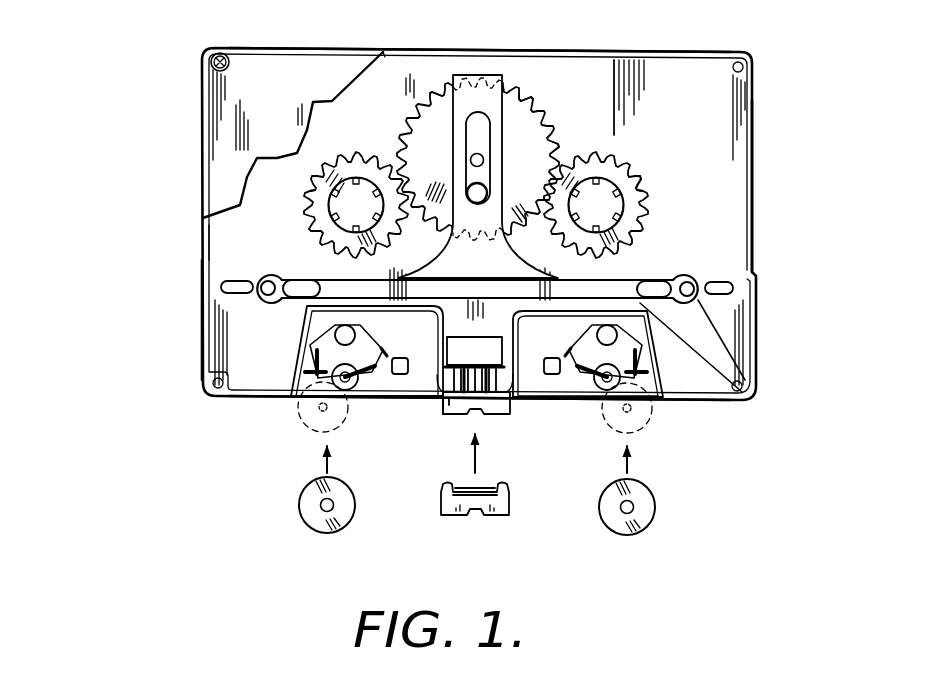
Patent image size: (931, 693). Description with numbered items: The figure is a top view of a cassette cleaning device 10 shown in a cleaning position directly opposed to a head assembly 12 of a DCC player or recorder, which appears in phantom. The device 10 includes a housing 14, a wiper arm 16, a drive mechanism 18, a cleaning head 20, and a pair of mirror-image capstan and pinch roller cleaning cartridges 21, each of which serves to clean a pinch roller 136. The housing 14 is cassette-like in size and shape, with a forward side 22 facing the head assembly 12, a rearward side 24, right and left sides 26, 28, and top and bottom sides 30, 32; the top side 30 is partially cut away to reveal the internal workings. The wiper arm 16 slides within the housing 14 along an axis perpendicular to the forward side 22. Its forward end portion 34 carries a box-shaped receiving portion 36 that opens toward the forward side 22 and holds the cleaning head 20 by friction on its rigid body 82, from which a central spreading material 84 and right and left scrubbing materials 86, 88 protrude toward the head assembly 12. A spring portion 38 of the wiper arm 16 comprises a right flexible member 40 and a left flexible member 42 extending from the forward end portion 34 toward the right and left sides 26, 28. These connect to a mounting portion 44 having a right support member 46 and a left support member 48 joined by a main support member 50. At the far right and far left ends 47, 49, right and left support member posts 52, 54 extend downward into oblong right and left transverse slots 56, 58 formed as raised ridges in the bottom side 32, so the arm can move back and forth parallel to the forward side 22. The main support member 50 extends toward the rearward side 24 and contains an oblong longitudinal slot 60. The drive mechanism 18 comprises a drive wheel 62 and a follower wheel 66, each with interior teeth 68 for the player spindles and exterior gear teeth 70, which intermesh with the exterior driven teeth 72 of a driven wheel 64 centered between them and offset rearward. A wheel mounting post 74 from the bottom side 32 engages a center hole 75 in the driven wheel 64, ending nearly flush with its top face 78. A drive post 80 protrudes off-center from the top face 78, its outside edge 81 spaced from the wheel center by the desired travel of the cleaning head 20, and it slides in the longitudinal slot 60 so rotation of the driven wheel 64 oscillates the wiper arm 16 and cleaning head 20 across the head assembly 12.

The cassette cleaning device 10 is at (126, 288).
The head assembly 12 is at (417, 513).
The housing 14 is at (204, 356).
The wiper arm 16 is at (501, 322).
The drive mechanism 18 is at (642, 112).
The cleaning head 20 is at (553, 400).
The capstan and pinch roller cleaning cartridge 21 is at (322, 392).
The forward side 22 is at (700, 402).
The rearward side 24 is at (478, 50).
The right side 26 is at (755, 165).
The left side 28 is at (204, 236).
The top side 30 is at (226, 136).
The bottom side 32 is at (423, 72).
The forward end portion 34 is at (437, 345).
The receiving portion 36 is at (394, 410).
The spring portion 38 is at (268, 370).
The right flexible member 40 is at (748, 385).
The left flexible member 42 is at (294, 303).
The mounting portion 44 is at (298, 245).
The right support member 46 is at (656, 275).
The far right end 47 is at (702, 278).
The left support member 48 is at (284, 278).
The far left end 49 is at (266, 296).
The main support member 50 is at (490, 98).
The right support member post 52 is at (752, 320).
The left support member post 54 is at (222, 285).
The right transverse slot 56 is at (735, 297).
The left transverse slot 58 is at (254, 302).
The longitudinal slot 60 is at (452, 118).
The drive wheel 62 is at (645, 208).
The driven wheel 64 is at (533, 112).
The follower wheel 66 is at (360, 152).
The interior teeth 68 is at (598, 232).
The exterior gear teeth 70 is at (305, 200).
The exterior driven teeth 72 is at (558, 145).
The wheel mounting post 74 is at (492, 150).
The center hole 75 is at (470, 160).
The top face 78 is at (437, 99).
The drive post 80 is at (488, 189).
The outside edge 81 is at (470, 240).
The rigid body 82 is at (477, 357).
The spreading material 84 is at (470, 416).
The right scrubbing material 86 is at (510, 400).
The left scrubbing material 88 is at (440, 404).
The pinch roller 136 is at (305, 524).